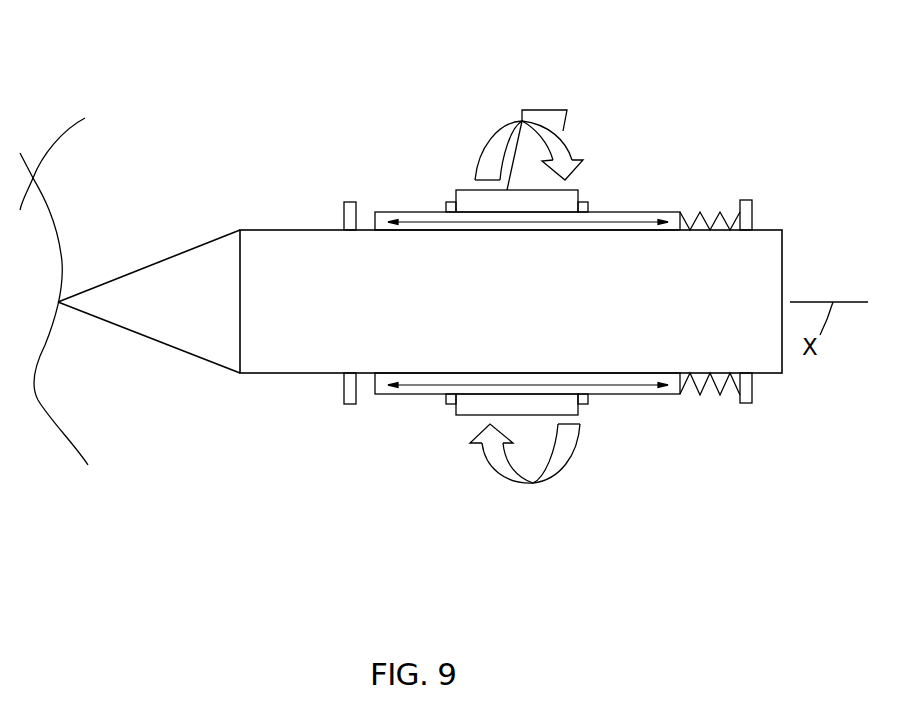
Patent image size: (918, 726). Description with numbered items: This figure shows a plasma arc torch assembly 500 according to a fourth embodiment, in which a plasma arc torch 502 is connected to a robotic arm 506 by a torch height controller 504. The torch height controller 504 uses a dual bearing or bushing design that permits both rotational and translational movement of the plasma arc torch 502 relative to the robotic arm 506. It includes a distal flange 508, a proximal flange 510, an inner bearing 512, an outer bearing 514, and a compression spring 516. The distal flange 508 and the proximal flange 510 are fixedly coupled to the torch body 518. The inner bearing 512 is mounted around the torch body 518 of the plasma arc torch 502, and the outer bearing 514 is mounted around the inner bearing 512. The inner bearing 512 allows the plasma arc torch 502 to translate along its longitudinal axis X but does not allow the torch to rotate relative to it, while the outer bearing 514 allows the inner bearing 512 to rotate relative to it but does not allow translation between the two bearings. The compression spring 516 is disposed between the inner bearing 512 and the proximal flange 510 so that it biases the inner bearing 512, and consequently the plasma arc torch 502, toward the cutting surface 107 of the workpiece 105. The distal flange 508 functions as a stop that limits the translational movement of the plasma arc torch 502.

The plasma arc torch assembly 500 is at (625, 62).
The plasma arc torch 502 is at (272, 422).
The torch height controller 504 is at (463, 173).
The robotic arm 506 is at (547, 110).
The distal flange 508 is at (350, 200).
The proximal flange 510 is at (752, 215).
The inner bearing 512 is at (642, 212).
The outer bearing 514 is at (575, 190).
The compression spring 516 is at (727, 387).
The torch body 518 is at (272, 245).
The workpiece 105 is at (76, 152).
The cutting surface 107 is at (47, 201).